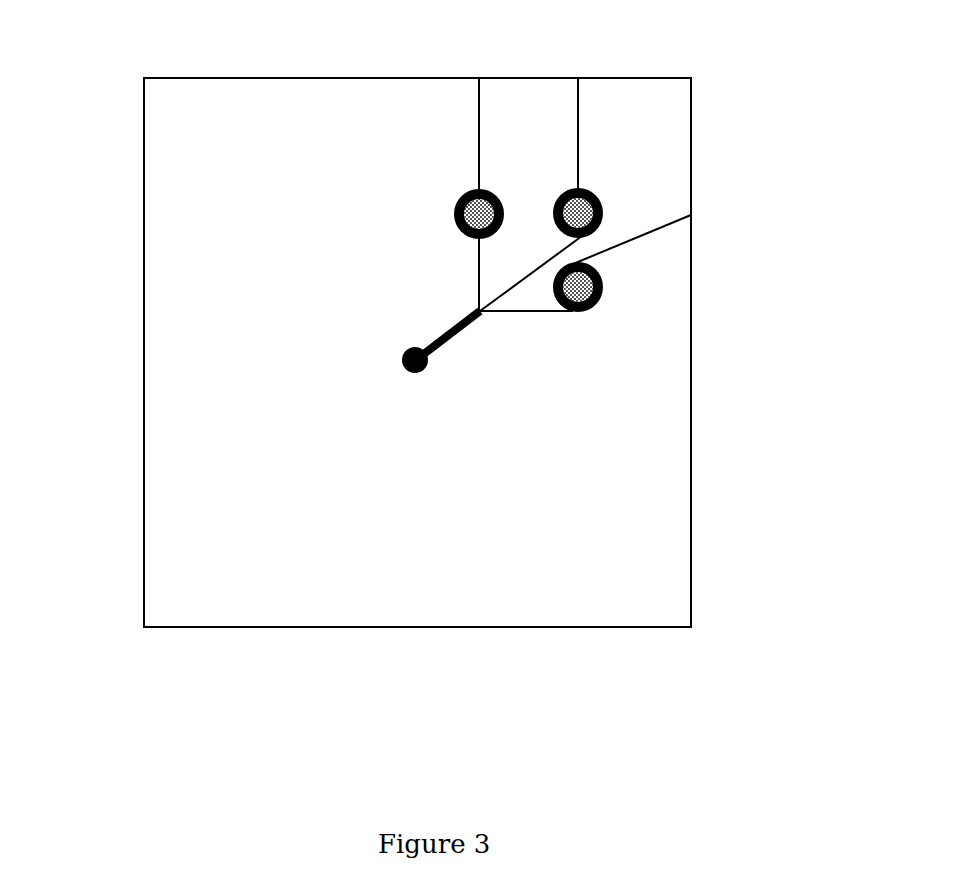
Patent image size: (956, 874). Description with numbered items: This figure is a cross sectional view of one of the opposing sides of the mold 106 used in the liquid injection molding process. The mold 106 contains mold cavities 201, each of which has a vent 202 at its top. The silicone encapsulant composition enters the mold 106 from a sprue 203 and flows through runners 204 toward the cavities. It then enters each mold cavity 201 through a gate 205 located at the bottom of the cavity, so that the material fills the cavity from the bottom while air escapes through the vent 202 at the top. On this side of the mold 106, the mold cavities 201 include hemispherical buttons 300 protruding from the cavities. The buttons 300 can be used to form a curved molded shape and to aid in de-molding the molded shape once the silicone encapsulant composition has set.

The mold 106 is at (278, 48).
The mold cavity 201 is at (606, 201).
The vent 202 is at (580, 128).
The sprue 203 is at (431, 362).
The runner 204 is at (477, 263).
The gate 205 is at (477, 240).
The button 300 is at (602, 288).